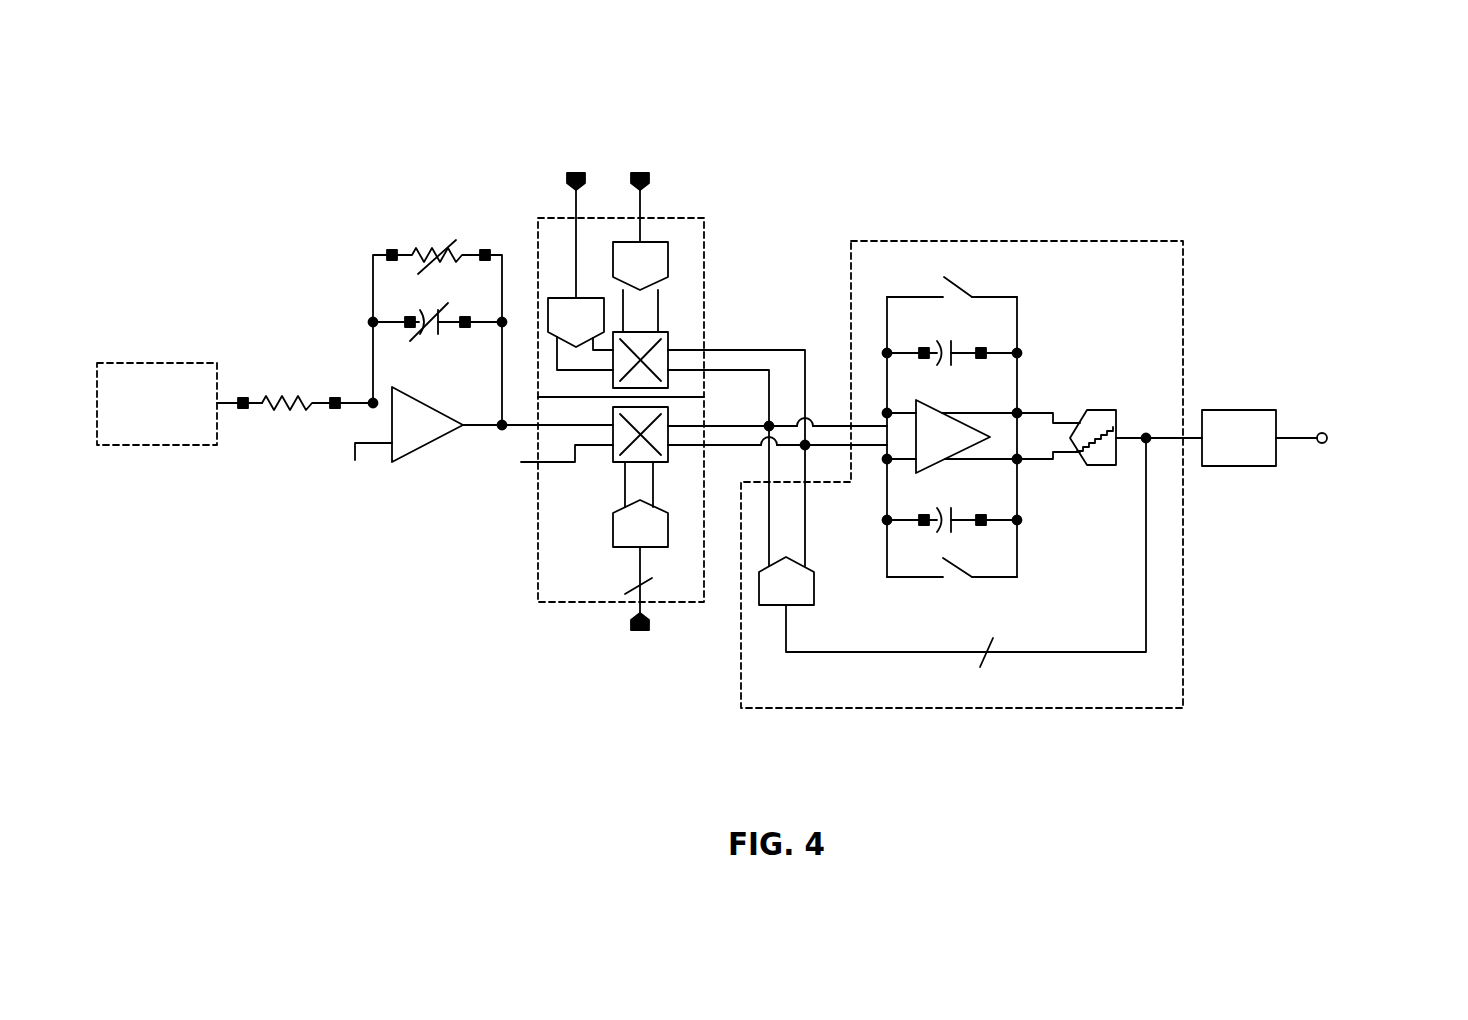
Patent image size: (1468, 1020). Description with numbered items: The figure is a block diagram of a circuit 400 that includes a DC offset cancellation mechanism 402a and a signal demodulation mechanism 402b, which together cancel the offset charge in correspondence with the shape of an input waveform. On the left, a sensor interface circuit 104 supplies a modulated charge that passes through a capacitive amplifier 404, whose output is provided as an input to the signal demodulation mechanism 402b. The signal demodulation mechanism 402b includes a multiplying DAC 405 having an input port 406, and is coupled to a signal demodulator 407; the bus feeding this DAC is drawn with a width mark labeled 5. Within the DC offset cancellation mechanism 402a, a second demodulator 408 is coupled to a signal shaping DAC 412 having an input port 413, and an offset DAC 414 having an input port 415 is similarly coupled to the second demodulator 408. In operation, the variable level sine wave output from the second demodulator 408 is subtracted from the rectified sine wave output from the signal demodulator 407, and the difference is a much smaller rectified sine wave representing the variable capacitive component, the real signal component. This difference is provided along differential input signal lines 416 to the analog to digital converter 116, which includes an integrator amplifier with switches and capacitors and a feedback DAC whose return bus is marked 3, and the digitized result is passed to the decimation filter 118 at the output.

The circuit 400 is at (1352, 104).
The sensor interface circuit 104 is at (167, 363).
The capacitive amplifier 404 is at (423, 447).
The DC offset cancellation mechanism 402a is at (704, 235).
The signal demodulation mechanism 402b is at (538, 503).
The input port 415 is at (576, 172).
The input port 413 is at (640, 172).
The signal shaping DAC 412 is at (655, 242).
The offset DAC 414 is at (557, 298).
The second demodulator 408 is at (668, 338).
The signal demodulator 407 is at (612, 475).
The multiplying DAC 405 is at (612, 538).
The input port 406 is at (641, 634).
The differential input signal lines 416 is at (830, 425).
The analog to digital converter 116 is at (974, 445).
The decimation filter 118 is at (1268, 410).
The 5-bit bus 5 is at (641, 578).
The 3-bit bus 3 is at (984, 646).